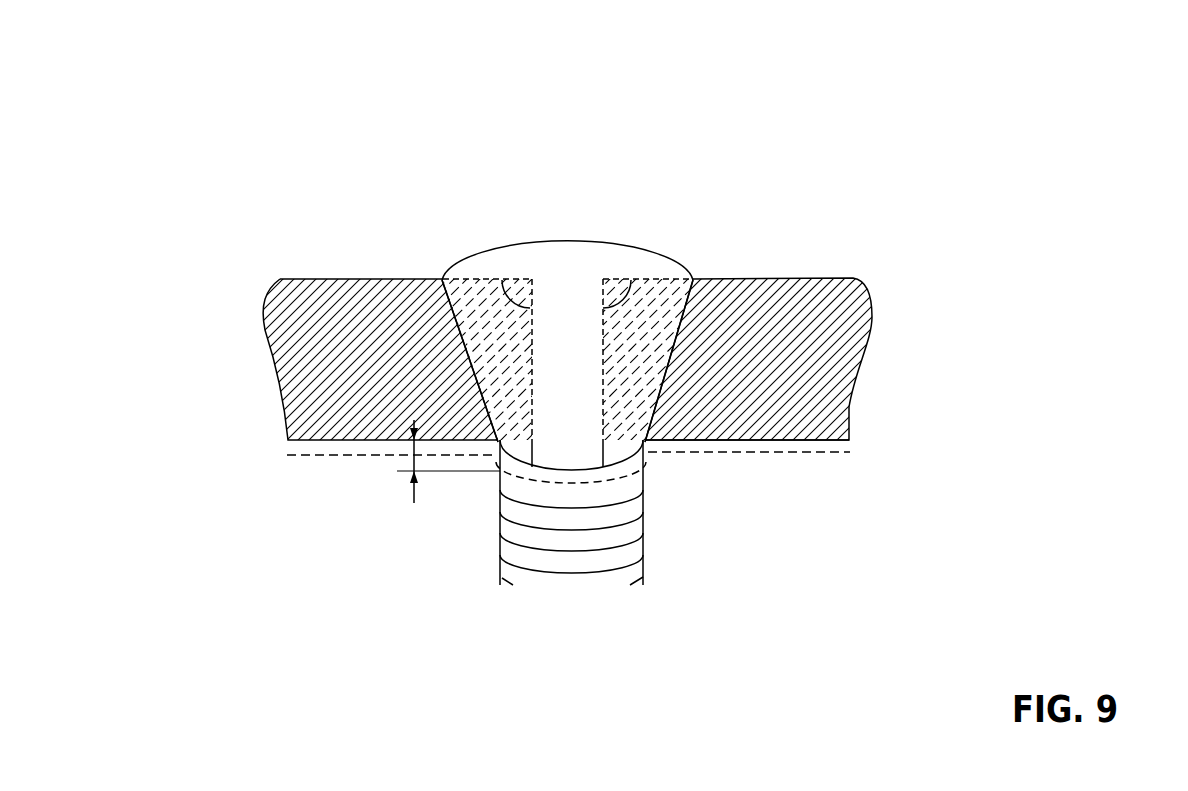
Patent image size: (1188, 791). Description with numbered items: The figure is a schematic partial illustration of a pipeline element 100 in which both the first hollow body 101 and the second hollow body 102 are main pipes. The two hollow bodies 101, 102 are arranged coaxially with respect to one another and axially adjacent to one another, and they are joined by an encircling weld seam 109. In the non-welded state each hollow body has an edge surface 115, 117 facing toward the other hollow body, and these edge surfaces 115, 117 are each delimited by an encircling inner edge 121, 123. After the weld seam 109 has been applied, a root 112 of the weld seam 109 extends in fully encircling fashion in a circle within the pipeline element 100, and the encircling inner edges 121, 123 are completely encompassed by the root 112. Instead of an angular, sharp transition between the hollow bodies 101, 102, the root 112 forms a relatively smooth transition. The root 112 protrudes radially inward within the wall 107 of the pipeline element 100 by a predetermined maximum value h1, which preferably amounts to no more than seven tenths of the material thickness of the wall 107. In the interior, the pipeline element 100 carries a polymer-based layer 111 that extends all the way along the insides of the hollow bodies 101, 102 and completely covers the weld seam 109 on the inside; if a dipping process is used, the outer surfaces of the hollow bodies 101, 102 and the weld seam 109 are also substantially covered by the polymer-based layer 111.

The pipeline element 100 is at (352, 148).
The first hollow body 101 is at (792, 292).
The second hollow body 102 is at (325, 292).
The wall 107 is at (750, 440).
The weld seam 109 is at (562, 238).
The polymer-based layer 111 is at (317, 455).
The root of the weld seam 112 is at (578, 474).
The edge surface 115 is at (628, 280).
The edge surface 117 is at (502, 280).
The encircling inner edge 121 is at (607, 433).
The encircling inner edge 123 is at (530, 434).
The predetermined maximum value h1 is at (407, 495).